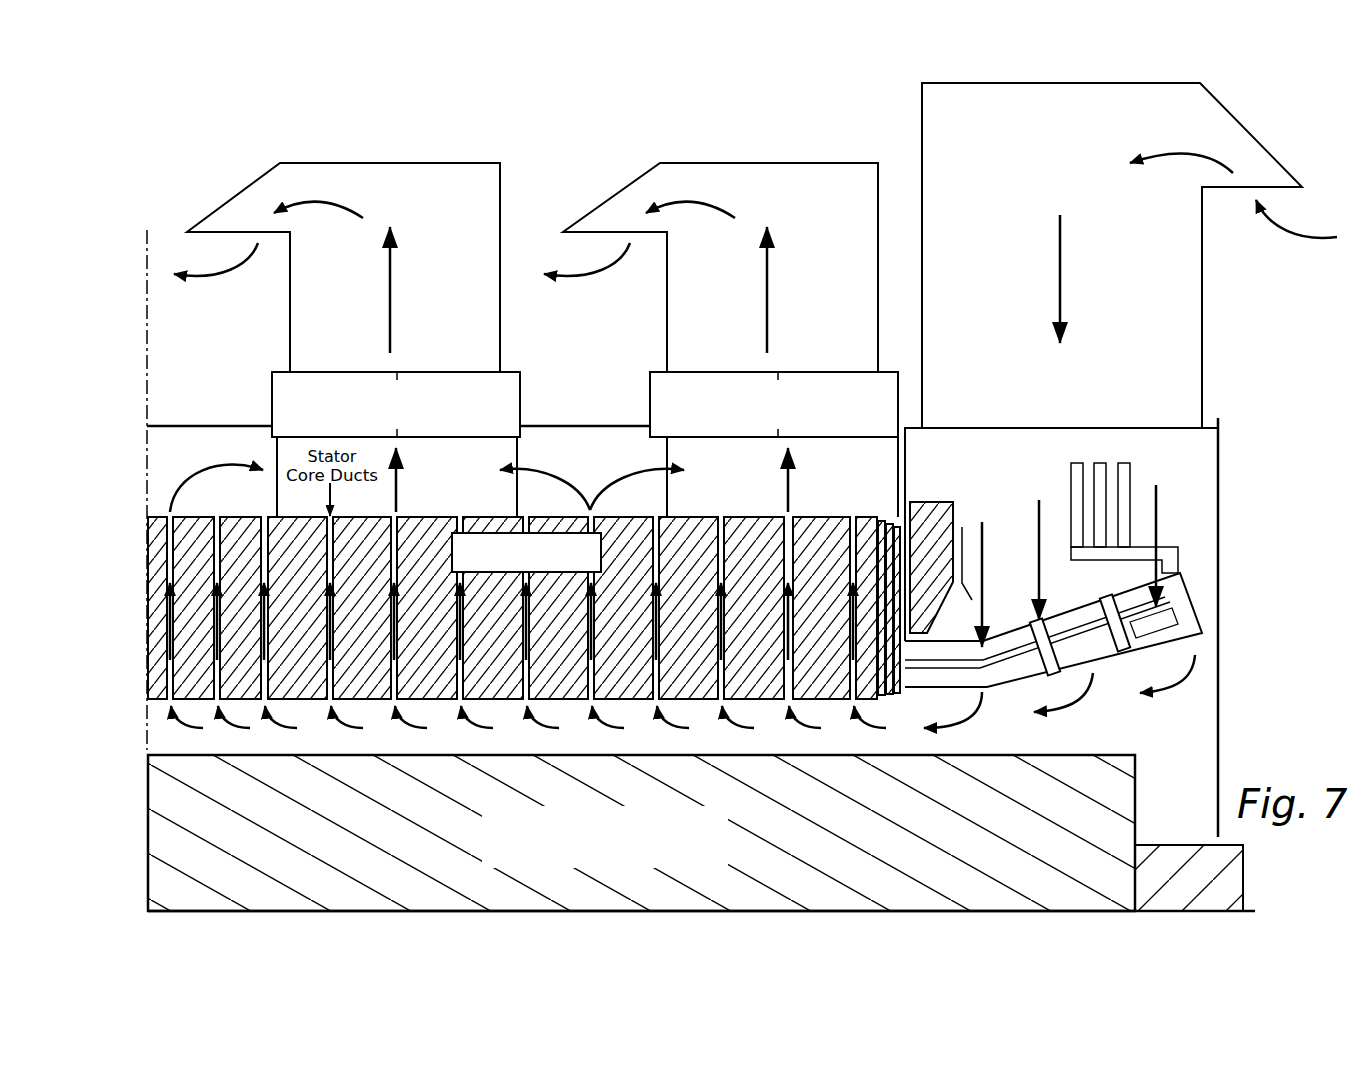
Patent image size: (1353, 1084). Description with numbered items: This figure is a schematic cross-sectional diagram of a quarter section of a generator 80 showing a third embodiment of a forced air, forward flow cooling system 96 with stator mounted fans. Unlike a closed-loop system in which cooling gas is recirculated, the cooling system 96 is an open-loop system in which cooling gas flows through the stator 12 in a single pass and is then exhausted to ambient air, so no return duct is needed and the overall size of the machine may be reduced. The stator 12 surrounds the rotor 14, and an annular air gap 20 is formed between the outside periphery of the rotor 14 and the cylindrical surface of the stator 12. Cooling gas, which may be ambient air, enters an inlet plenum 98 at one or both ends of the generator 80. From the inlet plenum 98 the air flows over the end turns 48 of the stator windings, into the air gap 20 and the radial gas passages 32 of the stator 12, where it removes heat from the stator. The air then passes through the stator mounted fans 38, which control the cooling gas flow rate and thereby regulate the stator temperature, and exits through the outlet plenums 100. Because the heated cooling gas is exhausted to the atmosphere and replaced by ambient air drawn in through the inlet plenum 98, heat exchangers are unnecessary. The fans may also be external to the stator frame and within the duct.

The stator 12 is at (152, 628).
The rotor 14 is at (618, 862).
The air gap 20 is at (165, 733).
The radial gas passages 32 is at (168, 553).
The stator mounted fans 38 is at (477, 411).
The end turns 48 is at (1100, 655).
The generator 80 is at (1238, 530).
The forced air, forward flow cooling system 96 is at (146, 472).
The inlet plenum 98 is at (1146, 310).
The outlet plenums 100 is at (807, 310).